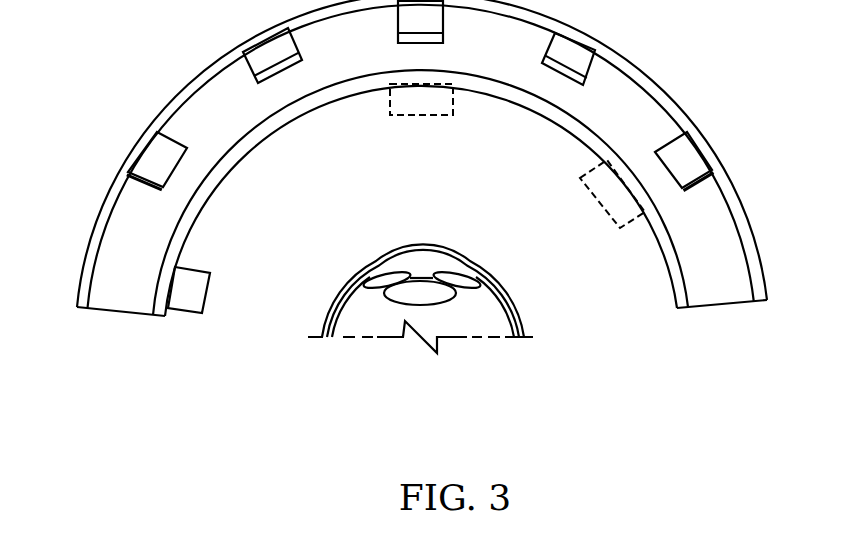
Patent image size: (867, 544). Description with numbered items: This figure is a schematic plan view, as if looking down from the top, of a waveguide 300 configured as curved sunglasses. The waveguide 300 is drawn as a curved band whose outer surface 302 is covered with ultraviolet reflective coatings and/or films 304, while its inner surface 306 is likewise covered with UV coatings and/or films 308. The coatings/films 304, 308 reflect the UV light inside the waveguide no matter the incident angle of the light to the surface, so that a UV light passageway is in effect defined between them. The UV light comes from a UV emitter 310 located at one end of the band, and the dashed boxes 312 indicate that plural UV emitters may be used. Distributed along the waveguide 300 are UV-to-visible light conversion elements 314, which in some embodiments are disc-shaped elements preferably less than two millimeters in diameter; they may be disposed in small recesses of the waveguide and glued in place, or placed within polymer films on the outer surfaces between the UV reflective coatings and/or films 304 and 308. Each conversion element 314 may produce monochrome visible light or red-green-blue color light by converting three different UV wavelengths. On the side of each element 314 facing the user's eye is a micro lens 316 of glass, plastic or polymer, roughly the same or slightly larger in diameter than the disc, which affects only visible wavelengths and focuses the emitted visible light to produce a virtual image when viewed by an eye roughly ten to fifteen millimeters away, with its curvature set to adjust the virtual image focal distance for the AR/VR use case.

The waveguide 300 is at (399, 184).
The outer surface 302 is at (125, 180).
The UV reflective coatings and/or films 304 is at (103, 201).
The inner surface 306 is at (233, 137).
The UV coatings and/or films 308 is at (218, 180).
The UV emitter 310 is at (210, 290).
The dashed boxes 312 is at (422, 115).
The UV-to-visible light conversion elements 314 is at (256, 47).
The micro lens 316 is at (299, 62).